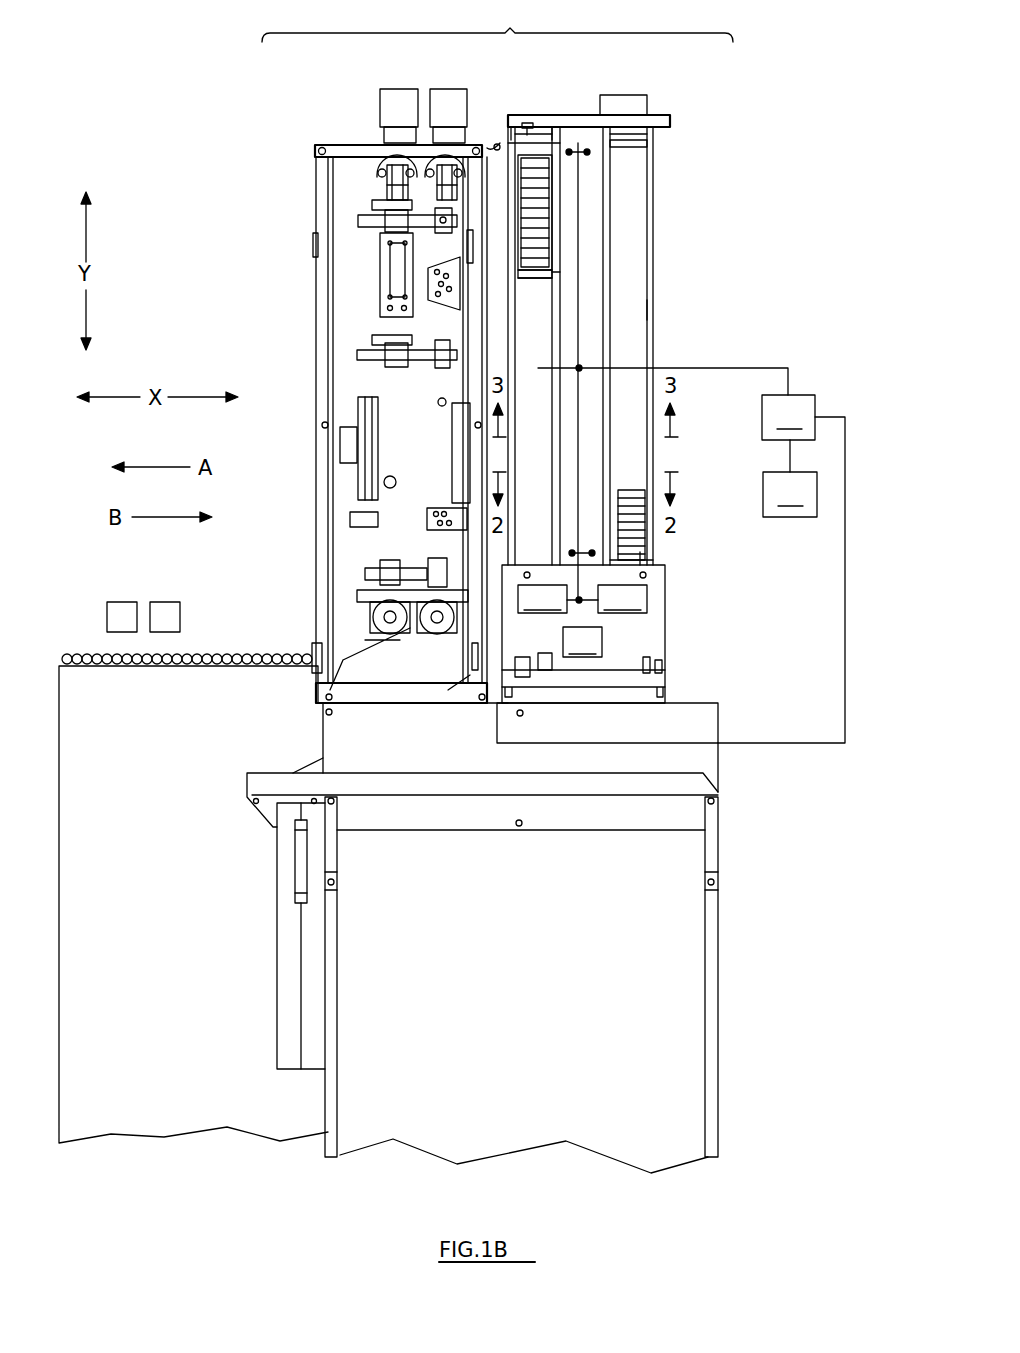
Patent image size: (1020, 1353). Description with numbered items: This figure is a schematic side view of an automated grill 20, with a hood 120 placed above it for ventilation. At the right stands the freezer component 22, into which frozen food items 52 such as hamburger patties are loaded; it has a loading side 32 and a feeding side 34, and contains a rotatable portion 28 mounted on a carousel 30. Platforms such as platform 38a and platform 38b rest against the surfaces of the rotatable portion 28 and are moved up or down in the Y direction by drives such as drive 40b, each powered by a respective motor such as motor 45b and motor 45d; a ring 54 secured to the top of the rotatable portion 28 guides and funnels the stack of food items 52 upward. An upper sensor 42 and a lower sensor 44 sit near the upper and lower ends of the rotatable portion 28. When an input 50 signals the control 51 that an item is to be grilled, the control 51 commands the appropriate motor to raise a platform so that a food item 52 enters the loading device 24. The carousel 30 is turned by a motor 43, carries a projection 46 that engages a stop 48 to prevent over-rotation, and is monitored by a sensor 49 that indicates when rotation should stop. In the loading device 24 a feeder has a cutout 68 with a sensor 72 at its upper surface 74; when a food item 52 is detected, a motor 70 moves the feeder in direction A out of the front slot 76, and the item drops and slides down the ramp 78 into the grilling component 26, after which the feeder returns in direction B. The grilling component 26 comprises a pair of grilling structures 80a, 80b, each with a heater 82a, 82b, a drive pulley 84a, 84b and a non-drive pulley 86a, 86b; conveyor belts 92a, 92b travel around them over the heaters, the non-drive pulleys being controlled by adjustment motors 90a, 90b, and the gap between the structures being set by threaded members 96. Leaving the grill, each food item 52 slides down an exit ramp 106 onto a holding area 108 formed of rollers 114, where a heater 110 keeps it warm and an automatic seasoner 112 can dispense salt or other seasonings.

The automated grill 20 is at (748, 213).
The freezer component 22 is at (652, 350).
The loading device 24 is at (585, 130).
The grilling component 26 is at (318, 214).
The rotatable portion 28 is at (590, 220).
The carousel 30 is at (650, 625).
The loading side 32 is at (652, 313).
The feeding side 34 is at (545, 367).
The platform 38a is at (645, 552).
The platform 38b is at (547, 273).
The drive 40b is at (540, 278).
The upper sensor 42 is at (587, 152).
The motor 43 is at (582, 642).
The lower sensor 44 is at (628, 545).
The motor 45b is at (542, 599).
The motor 45d is at (607, 599).
The projection 46 is at (548, 670).
The stop 48 is at (525, 680).
The sensor 49 is at (650, 665).
The input 50 is at (790, 478).
The control 51 is at (691, 554).
The food item 52 is at (625, 490).
The ring 54 is at (525, 137).
The cutout 68 is at (550, 133).
The motor 70 is at (633, 95).
The sensor 72 is at (532, 127).
The upper surface 74 is at (530, 127).
The front slot 76 is at (513, 127).
The ramp 78 is at (497, 147).
The grilling structure 80a is at (380, 290).
The grilling structure 80b is at (442, 406).
The heater 82a is at (428, 300).
The heater 82b is at (452, 430).
The drive pulley 84a is at (372, 617).
The drive pulley 84b is at (390, 602).
The non-drive pulley 86a is at (368, 175).
The non-drive pulley 86b is at (383, 197).
The adjustment motor 90a is at (382, 113).
The adjustment motor 90b is at (450, 88).
The conveyor belt 92a is at (380, 250).
The conveyor belt 92b is at (385, 355).
The threaded members 96 is at (358, 220).
The exit ramp 106 is at (305, 645).
The holding area 108 is at (110, 655).
The heater 110 is at (105, 605).
The automatic seasoner 112 is at (155, 602).
The rollers 114 is at (68, 663).
The hood 120 is at (497, 22).